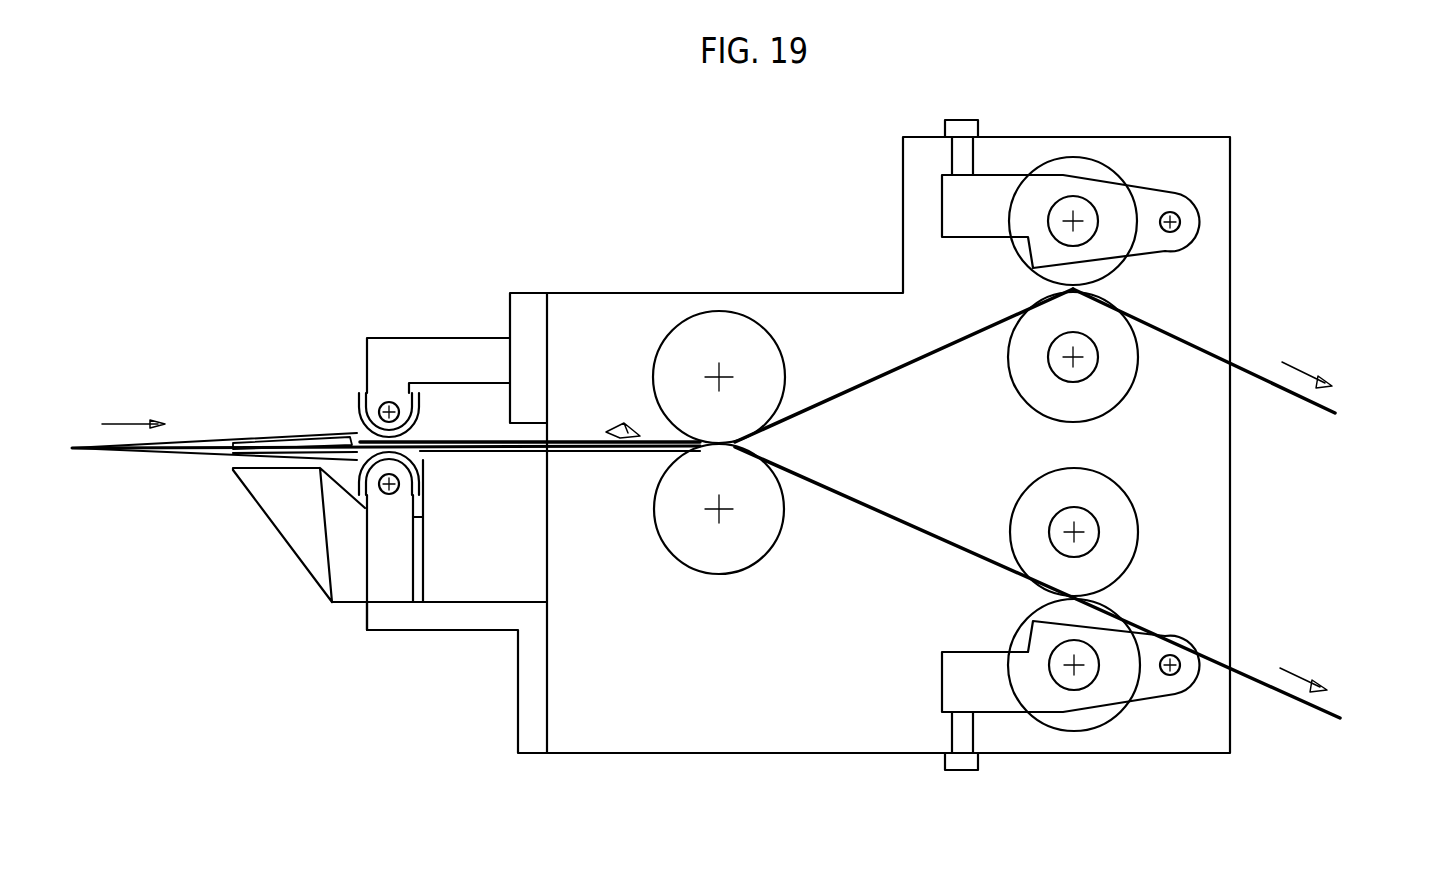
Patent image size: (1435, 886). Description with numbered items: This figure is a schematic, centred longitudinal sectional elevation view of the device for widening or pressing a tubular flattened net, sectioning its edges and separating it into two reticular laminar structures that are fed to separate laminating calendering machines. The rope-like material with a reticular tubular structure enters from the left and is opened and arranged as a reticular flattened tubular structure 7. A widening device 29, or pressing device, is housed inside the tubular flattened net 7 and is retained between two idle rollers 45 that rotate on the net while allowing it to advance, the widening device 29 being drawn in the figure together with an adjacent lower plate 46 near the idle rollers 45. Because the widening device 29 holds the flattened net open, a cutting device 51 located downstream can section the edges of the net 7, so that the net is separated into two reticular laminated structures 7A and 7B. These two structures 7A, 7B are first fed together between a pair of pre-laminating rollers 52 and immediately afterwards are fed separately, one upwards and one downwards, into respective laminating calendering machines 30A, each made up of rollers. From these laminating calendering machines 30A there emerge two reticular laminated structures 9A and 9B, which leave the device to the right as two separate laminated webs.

The reticular flattened tubular structure 7 is at (140, 452).
The reticular laminated structure 7A is at (862, 378).
The reticular laminated structure 7B is at (922, 535).
The reticular laminated structure 9A is at (1335, 413).
The reticular laminated structure 9B is at (1340, 718).
The widening device 29 is at (297, 437).
The laminating calendering machines 30A is at (1090, 170).
The idle rollers 45 is at (360, 400).
The lower guide plate 46 is at (355, 472).
The cutting device 51 is at (620, 425).
The pre-laminating rollers 52 is at (705, 560).